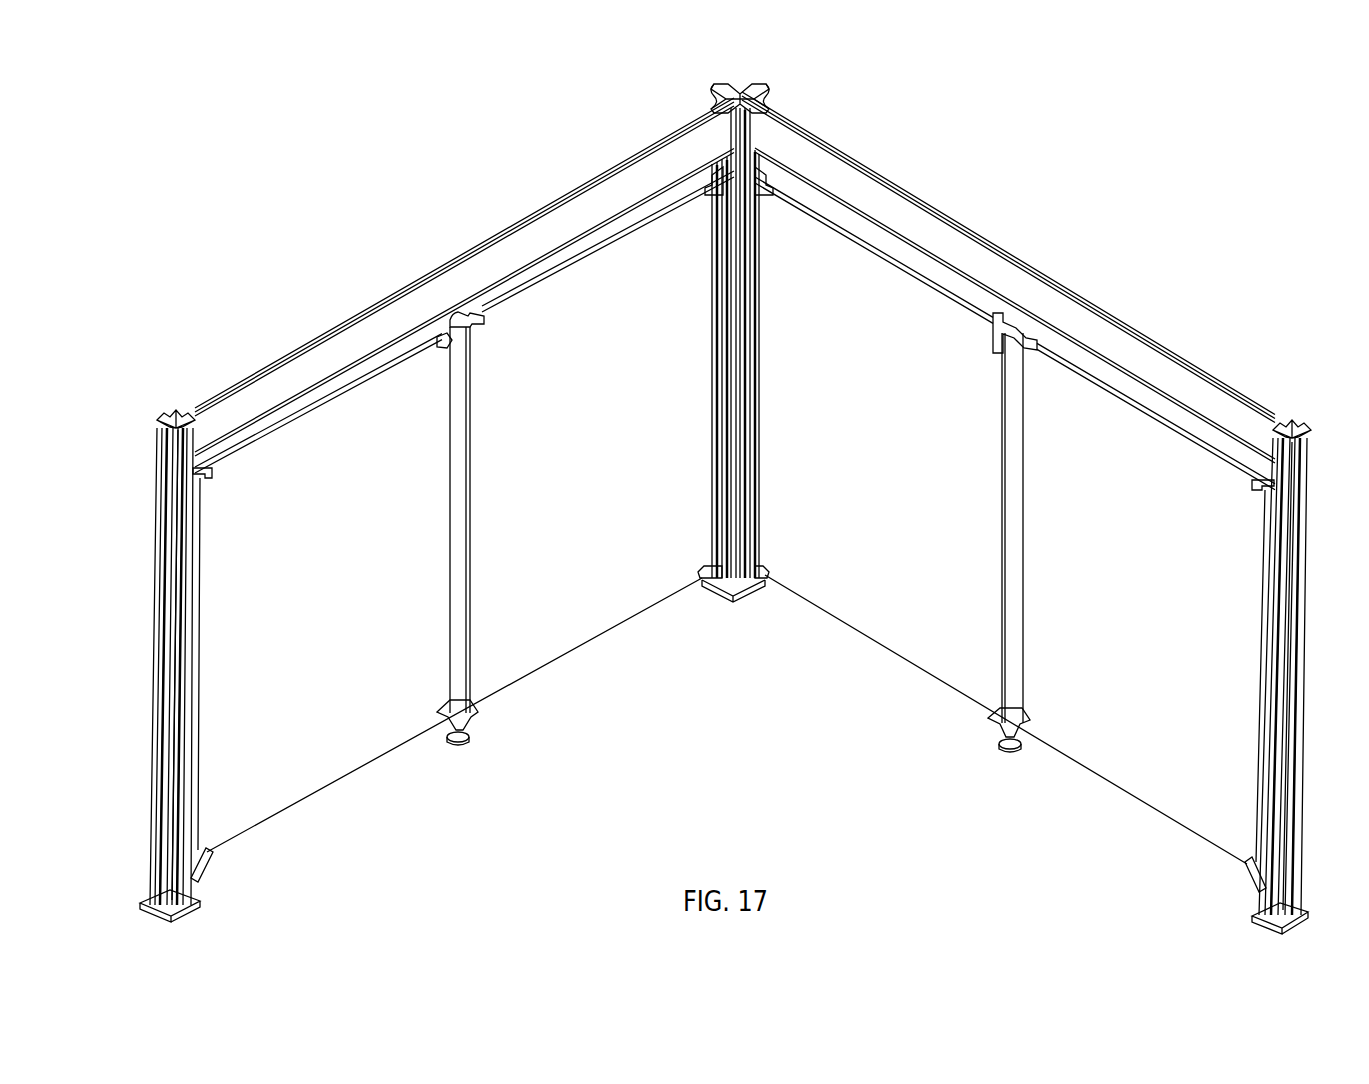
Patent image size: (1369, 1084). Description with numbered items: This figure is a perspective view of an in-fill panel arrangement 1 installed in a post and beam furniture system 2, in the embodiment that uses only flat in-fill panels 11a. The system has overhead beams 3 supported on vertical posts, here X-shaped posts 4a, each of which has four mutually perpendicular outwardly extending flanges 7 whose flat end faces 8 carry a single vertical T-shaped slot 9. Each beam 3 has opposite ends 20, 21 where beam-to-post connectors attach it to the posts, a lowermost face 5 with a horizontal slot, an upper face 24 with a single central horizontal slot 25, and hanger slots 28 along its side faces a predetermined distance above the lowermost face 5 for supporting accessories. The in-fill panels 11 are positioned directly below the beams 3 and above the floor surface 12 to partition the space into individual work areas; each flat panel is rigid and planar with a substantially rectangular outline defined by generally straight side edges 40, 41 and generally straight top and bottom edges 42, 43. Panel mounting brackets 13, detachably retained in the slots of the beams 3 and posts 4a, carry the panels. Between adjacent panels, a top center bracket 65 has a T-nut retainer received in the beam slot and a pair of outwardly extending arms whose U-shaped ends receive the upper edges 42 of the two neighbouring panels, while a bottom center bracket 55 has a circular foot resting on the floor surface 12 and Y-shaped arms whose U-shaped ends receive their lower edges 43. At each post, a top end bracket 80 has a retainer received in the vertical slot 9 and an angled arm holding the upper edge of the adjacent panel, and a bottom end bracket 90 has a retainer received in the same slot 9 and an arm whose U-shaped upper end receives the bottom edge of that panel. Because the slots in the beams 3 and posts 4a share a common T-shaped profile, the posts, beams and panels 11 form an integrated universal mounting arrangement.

The in-fill panel arrangement 1 is at (268, 843).
The post and beam furniture system 2 is at (770, 88).
The overhead beam 3 is at (289, 376).
The X-shaped post 4a is at (712, 90).
The lowermost face 5 is at (316, 398).
The flange 7 is at (160, 660).
The end face 8 is at (198, 566).
The slot 9 is at (185, 612).
The in-fill panel 11 is at (730, 541).
The flat in-fill panel 11a is at (340, 784).
The floor surface 12 is at (737, 763).
The panel mounting bracket 13 is at (446, 338).
The beam end 20 is at (217, 404).
The beam end 21 is at (1264, 412).
The upper face 24 is at (350, 315).
The horizontal slot 25 is at (424, 276).
The hanger slot 28 is at (518, 304).
The side edge 40 is at (765, 345).
The side edge 41 is at (712, 440).
The top edge 42 is at (592, 252).
The bottom edge 43 is at (663, 605).
The bottom center bracket 55 is at (470, 740).
The top center bracket 65 is at (480, 334).
The top end bracket 80 is at (214, 478).
The bottom end bracket 90 is at (210, 878).